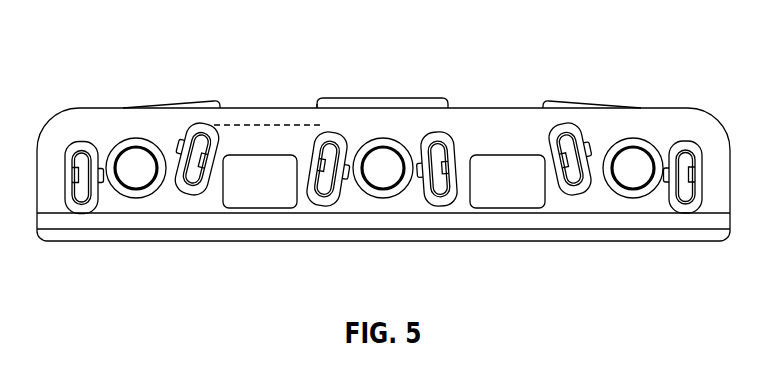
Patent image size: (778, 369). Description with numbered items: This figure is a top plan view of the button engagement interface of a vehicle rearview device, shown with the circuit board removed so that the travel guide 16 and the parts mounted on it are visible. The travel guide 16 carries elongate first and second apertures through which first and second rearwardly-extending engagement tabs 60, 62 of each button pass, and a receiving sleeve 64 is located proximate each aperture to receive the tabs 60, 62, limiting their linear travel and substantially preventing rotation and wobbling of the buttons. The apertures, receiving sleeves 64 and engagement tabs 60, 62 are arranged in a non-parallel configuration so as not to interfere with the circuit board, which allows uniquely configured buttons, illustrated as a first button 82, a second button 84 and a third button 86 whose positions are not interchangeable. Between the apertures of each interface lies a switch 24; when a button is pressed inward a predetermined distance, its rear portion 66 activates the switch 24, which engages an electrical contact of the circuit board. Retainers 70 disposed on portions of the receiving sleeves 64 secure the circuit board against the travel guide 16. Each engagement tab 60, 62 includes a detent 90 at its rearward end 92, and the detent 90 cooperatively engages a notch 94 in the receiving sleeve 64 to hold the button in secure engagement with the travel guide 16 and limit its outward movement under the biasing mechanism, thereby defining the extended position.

The travel guide 16 is at (258, 125).
The switch 24 is at (140, 175).
The first rearwardly-extending engagement tab 60 is at (82, 152).
The second rearwardly-extending engagement tab 62 is at (213, 137).
The receiving sleeve 64 is at (457, 132).
The rear portion 66 is at (382, 74).
The retainer 70 is at (593, 153).
The first button 82 is at (197, 103).
The second button 84 is at (325, 98).
The third button 86 is at (566, 100).
The detent 90 is at (445, 167).
The rearward end 92 is at (338, 187).
The notch 94 is at (561, 168).